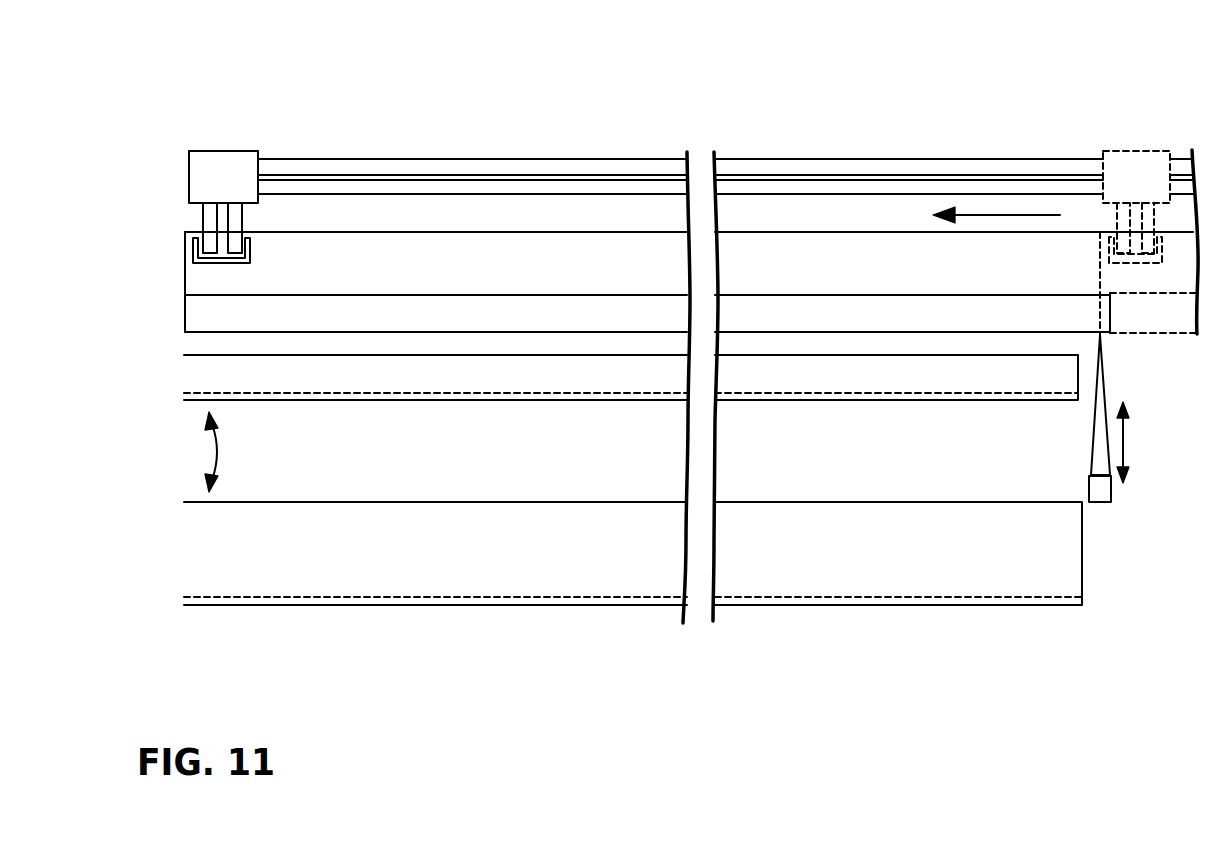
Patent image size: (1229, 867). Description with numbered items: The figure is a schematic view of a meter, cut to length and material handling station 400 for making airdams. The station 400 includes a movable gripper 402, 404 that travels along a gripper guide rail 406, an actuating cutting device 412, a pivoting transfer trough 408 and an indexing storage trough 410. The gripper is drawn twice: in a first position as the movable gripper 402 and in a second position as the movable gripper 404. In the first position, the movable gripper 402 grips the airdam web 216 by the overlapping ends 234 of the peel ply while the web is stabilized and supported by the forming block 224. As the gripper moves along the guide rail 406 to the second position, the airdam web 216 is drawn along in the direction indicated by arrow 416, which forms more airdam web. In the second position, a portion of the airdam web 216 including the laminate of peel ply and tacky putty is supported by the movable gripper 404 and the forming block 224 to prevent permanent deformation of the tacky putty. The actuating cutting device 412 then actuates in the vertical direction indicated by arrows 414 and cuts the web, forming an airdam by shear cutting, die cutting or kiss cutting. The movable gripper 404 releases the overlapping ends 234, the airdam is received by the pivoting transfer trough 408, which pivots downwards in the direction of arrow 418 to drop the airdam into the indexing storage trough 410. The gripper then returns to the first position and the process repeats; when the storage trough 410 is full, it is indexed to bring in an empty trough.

The meter, cut to length and material handling station 400 is at (272, 62).
The movable gripper (first position) 402 is at (1135, 163).
The movable gripper (second position) 404 is at (218, 162).
The gripper guide rail 406 is at (573, 173).
The pivoting transfer trough 408 is at (202, 376).
The indexing storage trough 410 is at (222, 540).
The actuating cutting device 412 is at (1107, 383).
The arrows (vertical direction) 414 is at (1125, 442).
The arrow (web movement) 416 is at (985, 215).
The arrow (pivot direction) 418 is at (215, 460).
The airdam web 216 is at (185, 317).
The forming block 224 is at (1162, 320).
The overlapping ends 234 is at (205, 277).